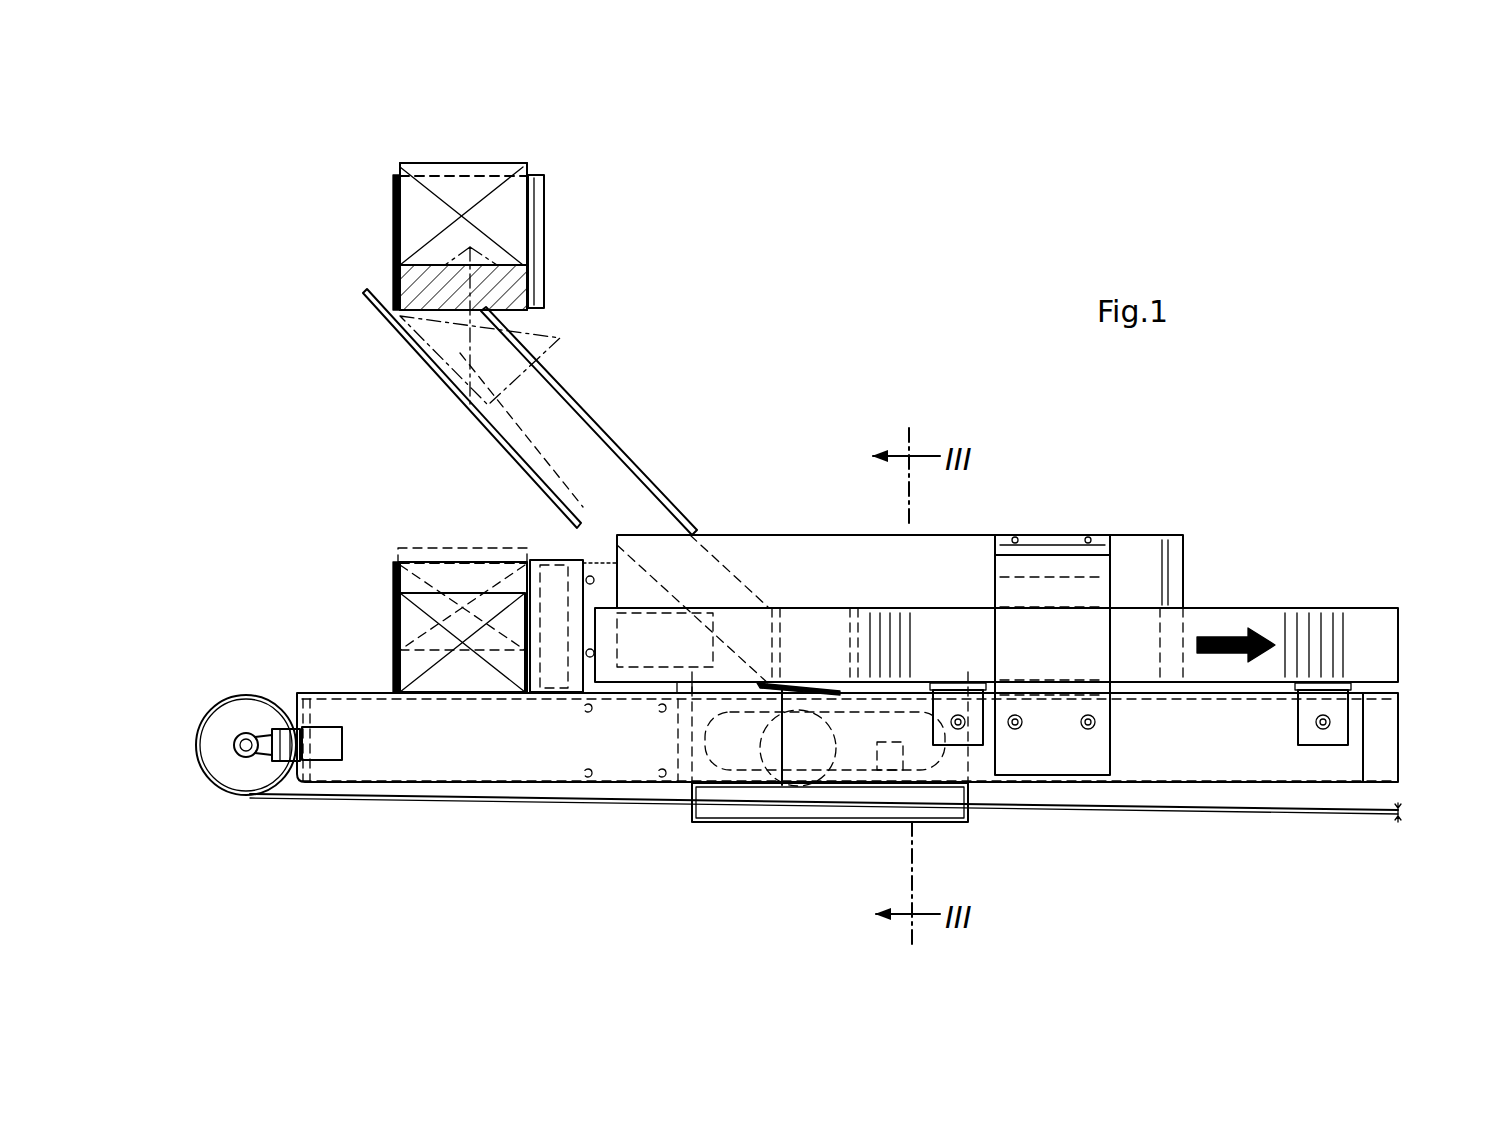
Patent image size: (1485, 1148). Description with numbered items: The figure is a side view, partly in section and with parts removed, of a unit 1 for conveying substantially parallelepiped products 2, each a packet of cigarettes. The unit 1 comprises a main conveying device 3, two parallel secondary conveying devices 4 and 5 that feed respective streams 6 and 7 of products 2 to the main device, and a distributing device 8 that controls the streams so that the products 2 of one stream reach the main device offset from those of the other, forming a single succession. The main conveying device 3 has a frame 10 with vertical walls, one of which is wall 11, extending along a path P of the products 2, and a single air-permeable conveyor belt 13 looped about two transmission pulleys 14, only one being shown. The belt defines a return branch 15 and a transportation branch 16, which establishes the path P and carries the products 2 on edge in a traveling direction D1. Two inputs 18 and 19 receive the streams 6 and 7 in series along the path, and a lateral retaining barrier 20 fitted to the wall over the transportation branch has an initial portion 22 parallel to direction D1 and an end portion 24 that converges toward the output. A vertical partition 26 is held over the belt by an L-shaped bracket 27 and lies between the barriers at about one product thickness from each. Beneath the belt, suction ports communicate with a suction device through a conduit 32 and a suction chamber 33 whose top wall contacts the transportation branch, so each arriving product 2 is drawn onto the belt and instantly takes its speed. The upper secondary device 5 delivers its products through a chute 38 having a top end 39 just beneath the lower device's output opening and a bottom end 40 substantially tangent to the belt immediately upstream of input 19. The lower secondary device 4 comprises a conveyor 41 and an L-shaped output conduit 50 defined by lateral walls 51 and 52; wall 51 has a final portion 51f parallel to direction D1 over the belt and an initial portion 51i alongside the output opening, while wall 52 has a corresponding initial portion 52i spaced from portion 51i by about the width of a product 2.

The unit 1 is at (1342, 375).
The products 2 is at (478, 173).
The main conveying device 3 is at (1406, 737).
The secondary conveying device 4 is at (362, 583).
The secondary conveying device 5 is at (357, 200).
The stream 6 is at (428, 548).
The stream 7 is at (538, 165).
The distributing device 8 is at (352, 607).
The frame 10 is at (1403, 757).
The vertical wall 11 is at (1258, 752).
The conveyor belt 13 is at (1320, 821).
The transmission pulley 14 is at (233, 720).
The return branch 15 is at (1145, 812).
The transportation branch 16 is at (1388, 693).
The input 18 is at (430, 686).
The input 19 is at (855, 683).
The lateral retaining barrier 20 is at (1327, 603).
The initial portion 22 is at (795, 625).
The end portion 24 is at (1285, 617).
The vertical partition 26 is at (820, 548).
The L-shaped bracket 27 is at (1040, 750).
The conduit 32 is at (815, 783).
The suction chamber 33 is at (895, 785).
The chute 38 is at (470, 423).
The top end 39 is at (383, 320).
The bottom end 40 is at (793, 700).
The conveyor 41 is at (375, 261).
The output conduit 50 is at (405, 228).
The lateral wall 51 is at (545, 239).
The final portion 51f is at (536, 278).
The initial portion 51i is at (528, 566).
The lateral wall 52 is at (390, 233).
The initial portion 52i is at (393, 210).
The traveling direction D1 is at (1215, 635).
The path P is at (1265, 692).